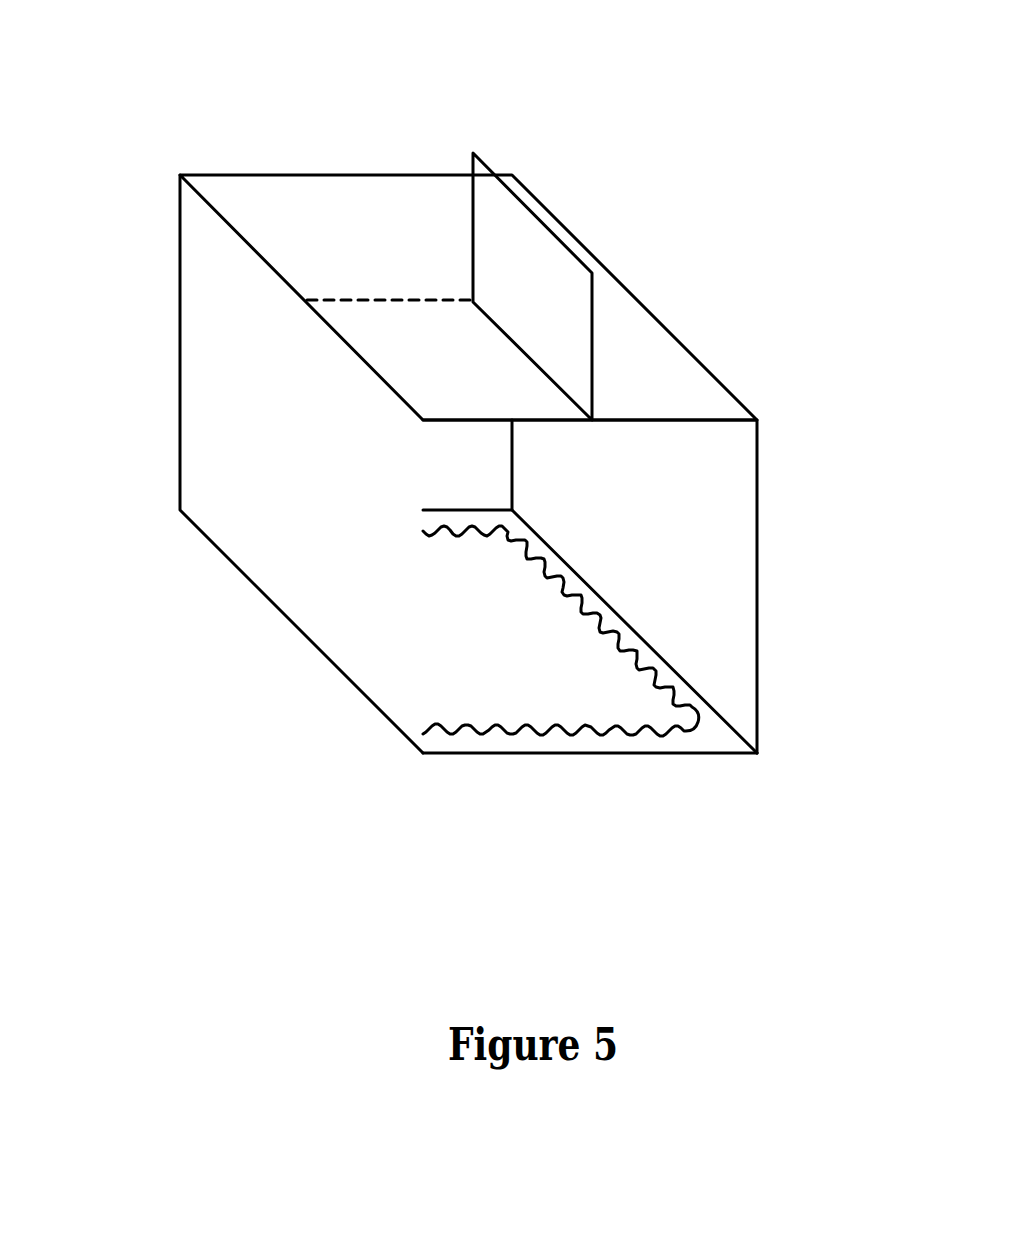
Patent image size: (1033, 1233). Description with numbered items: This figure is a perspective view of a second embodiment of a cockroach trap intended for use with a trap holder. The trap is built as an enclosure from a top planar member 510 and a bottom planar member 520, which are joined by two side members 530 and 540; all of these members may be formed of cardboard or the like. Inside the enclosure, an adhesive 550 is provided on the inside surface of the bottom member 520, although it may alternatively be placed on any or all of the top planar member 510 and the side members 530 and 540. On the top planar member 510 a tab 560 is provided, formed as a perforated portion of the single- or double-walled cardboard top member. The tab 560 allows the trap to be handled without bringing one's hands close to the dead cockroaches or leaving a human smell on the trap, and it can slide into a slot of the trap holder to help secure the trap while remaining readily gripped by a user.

The top planar member 510 is at (270, 200).
The bottom planar member 520 is at (673, 755).
The side member 530 is at (205, 301).
The side member 540 is at (757, 530).
The adhesive 550 is at (515, 712).
The tab 560 is at (497, 230).